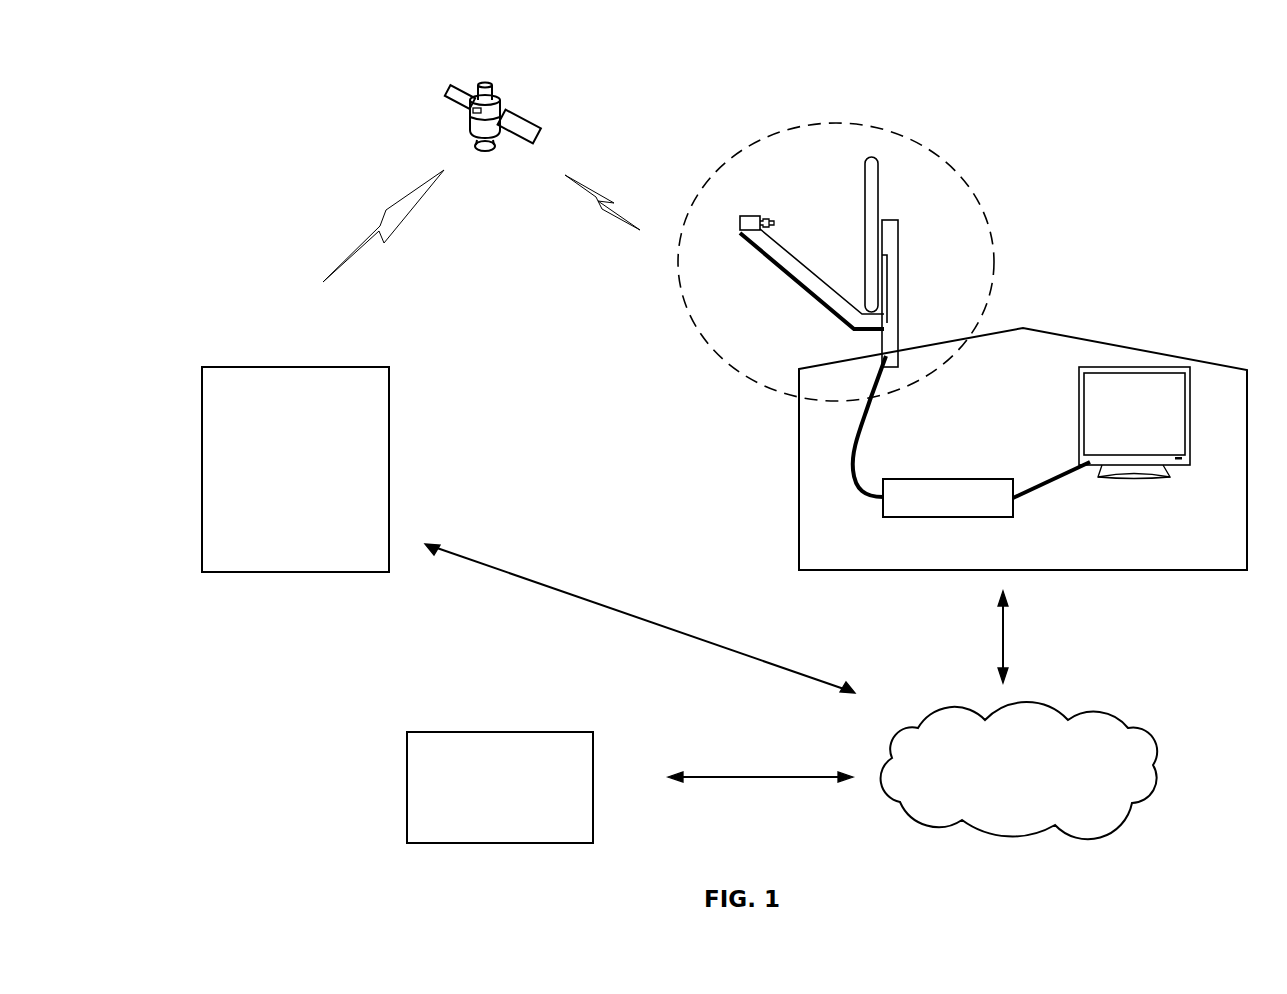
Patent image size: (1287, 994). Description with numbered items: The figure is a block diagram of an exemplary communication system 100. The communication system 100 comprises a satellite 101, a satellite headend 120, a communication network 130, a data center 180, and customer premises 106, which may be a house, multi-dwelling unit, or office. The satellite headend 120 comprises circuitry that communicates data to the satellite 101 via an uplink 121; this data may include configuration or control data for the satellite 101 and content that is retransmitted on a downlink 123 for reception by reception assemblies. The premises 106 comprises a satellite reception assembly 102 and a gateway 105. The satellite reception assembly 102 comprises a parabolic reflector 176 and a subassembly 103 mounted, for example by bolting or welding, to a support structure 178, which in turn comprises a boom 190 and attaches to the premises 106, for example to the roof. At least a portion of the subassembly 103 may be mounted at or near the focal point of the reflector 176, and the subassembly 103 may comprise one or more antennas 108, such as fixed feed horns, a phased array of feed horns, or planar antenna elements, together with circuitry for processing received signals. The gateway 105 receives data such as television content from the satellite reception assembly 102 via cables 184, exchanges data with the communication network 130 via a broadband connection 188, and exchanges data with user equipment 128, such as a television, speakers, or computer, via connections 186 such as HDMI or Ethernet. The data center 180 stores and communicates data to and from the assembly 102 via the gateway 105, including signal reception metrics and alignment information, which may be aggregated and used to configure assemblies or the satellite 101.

The communication system 100 is at (295, 106).
The satellite 101 is at (500, 100).
The satellite reception assembly 102 is at (714, 177).
The subassembly 103 is at (741, 230).
The gateway 105 is at (948, 498).
The customer premises 106 is at (798, 458).
The antenna 108 is at (775, 225).
The satellite headend 120 is at (295, 469).
The uplink 121 is at (356, 249).
The downlink 123 is at (597, 204).
The user equipment 128 is at (1078, 401).
The communication network 130 is at (1019, 770).
The parabolic reflector 176 is at (879, 194).
The support structure 178 is at (899, 257).
The data center 180 is at (500, 787).
The cable 184 is at (863, 407).
The connection 186 is at (1052, 473).
The broadband connection 188 is at (1005, 645).
The boom 190 is at (808, 271).